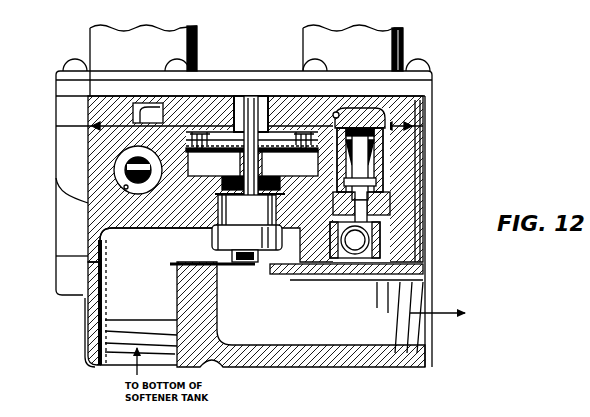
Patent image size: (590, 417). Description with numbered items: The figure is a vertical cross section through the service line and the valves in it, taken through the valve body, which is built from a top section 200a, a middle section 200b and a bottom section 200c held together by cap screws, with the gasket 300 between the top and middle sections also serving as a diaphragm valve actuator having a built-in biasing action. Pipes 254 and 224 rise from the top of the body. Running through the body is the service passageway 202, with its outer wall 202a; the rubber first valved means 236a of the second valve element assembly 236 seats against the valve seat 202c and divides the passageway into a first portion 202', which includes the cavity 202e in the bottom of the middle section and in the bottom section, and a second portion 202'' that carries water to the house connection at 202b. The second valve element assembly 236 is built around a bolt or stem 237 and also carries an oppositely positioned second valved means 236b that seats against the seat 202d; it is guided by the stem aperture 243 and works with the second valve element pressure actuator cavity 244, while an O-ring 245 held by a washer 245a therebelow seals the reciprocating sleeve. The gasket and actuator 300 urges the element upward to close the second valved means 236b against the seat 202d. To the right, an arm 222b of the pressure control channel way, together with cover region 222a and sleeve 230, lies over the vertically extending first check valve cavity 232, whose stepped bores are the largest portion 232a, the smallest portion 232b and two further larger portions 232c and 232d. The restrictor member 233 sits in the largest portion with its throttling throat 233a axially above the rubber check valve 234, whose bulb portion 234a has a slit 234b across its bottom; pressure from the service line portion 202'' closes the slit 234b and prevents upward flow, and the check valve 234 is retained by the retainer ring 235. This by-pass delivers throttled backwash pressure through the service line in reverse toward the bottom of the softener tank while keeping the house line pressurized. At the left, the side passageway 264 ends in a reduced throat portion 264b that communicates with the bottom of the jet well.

The top section 200a is at (62, 108).
The middle section 200b is at (62, 153).
The bottom section 200c is at (62, 278).
The gasket 300 is at (56, 126).
The inlet pipe 254 is at (100, 43).
The outlet pipe 224 is at (402, 46).
The service passageway 202 is at (256, 242).
The body outer wall 202a is at (106, 362).
The first portion of service passageway 202' is at (78, 302).
The second portion of service passageway 202'' is at (226, 354).
The house connection 202b is at (430, 344).
The valve seat 202c is at (290, 268).
The seat 202d is at (200, 224).
The cavity 202e is at (156, 243).
The reduced throat portion 264b is at (138, 160).
The side passageway 264 is at (126, 190).
The second valve element pressure actuator cavity 244 is at (178, 186).
The O-ring 245 is at (272, 190).
The washer 245a is at (274, 204).
The stem aperture 243 is at (214, 154).
The throttling throat 233a is at (290, 154).
The guide sleeve 230 is at (237, 110).
The second valve element assembly 236 is at (251, 108).
The first valved means 236a is at (216, 244).
The second valved means 236b is at (308, 225).
The bolt or stem 237 is at (247, 264).
The cover plate 222a is at (304, 110).
The arm of first pressure control channel way 222b is at (395, 110).
The first check valve cavity 232 is at (418, 153).
The largest diameter bore portion 232a is at (418, 166).
The smallest diameter bore portion 232b is at (376, 182).
The stepped bore portion 232c is at (386, 202).
The stepped bore portion 232d is at (380, 214).
The restrictor member 233 is at (375, 146).
The check valve 234 is at (418, 227).
The bulb portion 234a is at (372, 240).
The slit 234b is at (355, 264).
The retainer ring 235 is at (418, 252).